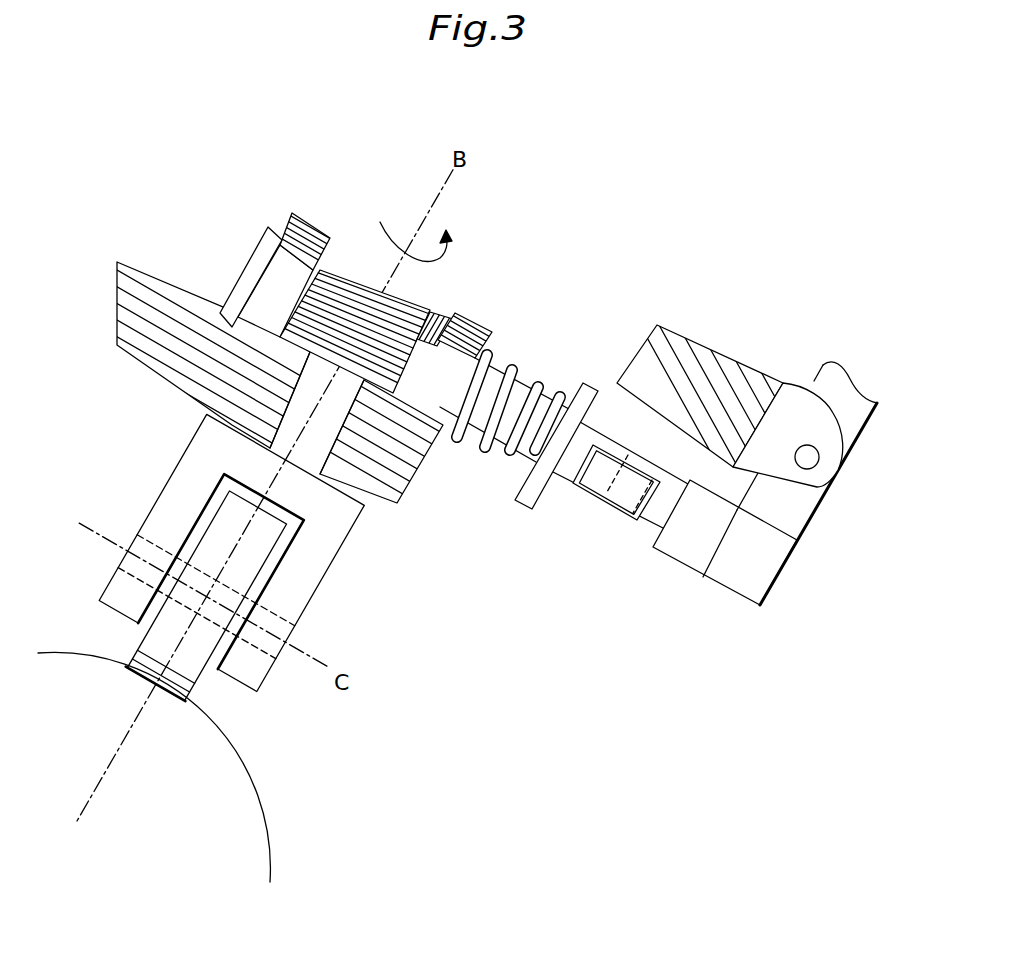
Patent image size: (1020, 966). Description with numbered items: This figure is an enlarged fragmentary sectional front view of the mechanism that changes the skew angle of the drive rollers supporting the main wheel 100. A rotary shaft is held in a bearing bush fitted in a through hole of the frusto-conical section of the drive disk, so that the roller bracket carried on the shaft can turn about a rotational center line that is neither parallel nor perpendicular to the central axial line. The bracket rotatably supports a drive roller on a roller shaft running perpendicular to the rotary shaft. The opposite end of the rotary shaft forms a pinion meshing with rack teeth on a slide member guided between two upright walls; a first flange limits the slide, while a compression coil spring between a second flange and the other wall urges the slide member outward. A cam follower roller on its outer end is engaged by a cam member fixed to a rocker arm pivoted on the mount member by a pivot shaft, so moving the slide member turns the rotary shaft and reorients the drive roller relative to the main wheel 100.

The main wheel 100 is at (266, 785).